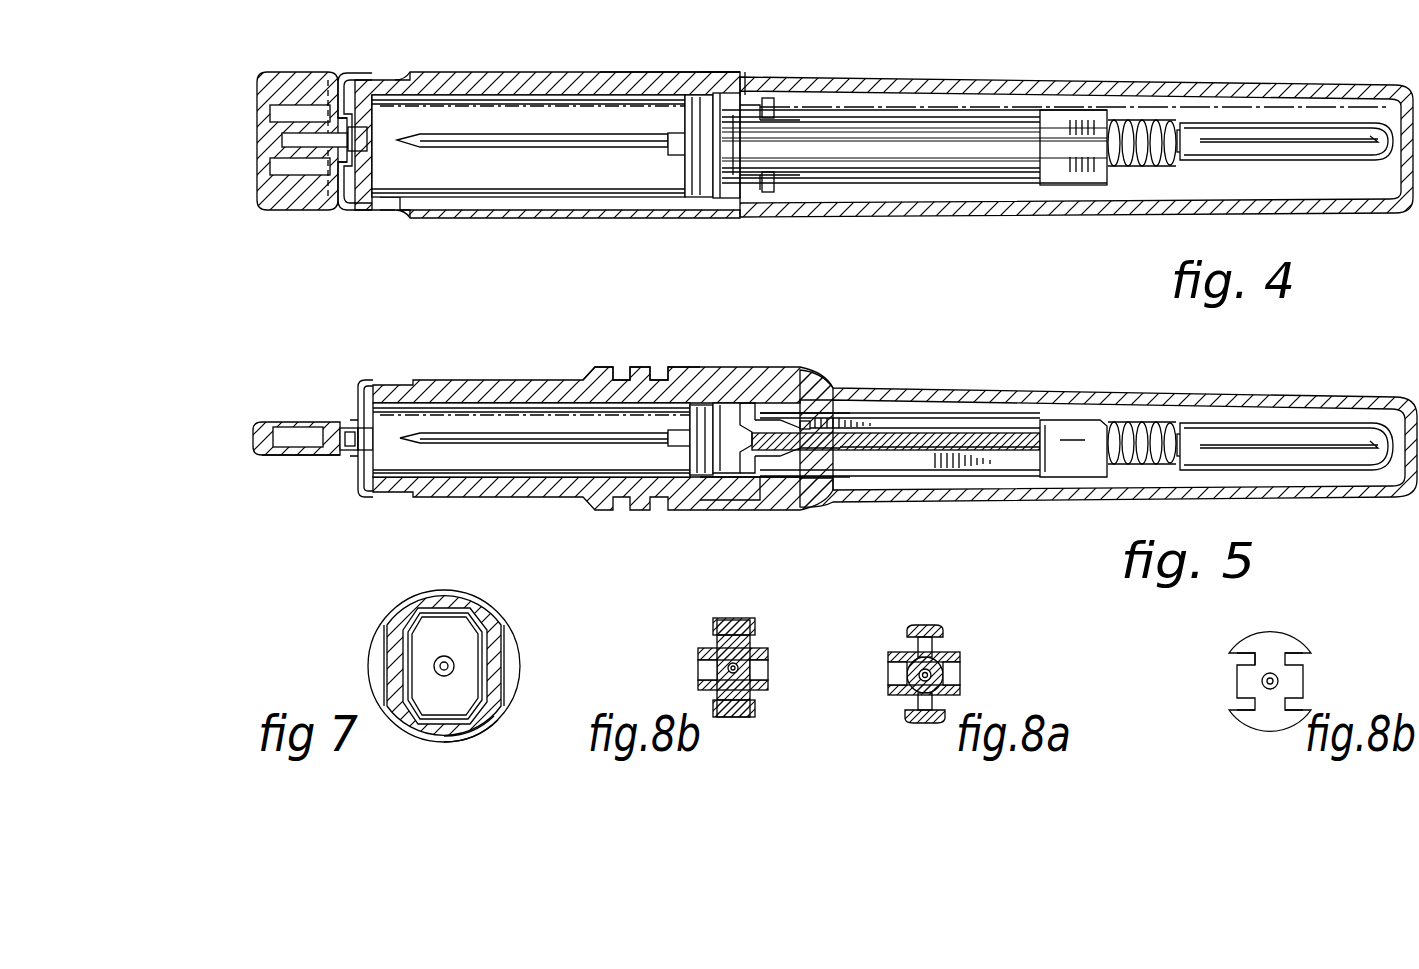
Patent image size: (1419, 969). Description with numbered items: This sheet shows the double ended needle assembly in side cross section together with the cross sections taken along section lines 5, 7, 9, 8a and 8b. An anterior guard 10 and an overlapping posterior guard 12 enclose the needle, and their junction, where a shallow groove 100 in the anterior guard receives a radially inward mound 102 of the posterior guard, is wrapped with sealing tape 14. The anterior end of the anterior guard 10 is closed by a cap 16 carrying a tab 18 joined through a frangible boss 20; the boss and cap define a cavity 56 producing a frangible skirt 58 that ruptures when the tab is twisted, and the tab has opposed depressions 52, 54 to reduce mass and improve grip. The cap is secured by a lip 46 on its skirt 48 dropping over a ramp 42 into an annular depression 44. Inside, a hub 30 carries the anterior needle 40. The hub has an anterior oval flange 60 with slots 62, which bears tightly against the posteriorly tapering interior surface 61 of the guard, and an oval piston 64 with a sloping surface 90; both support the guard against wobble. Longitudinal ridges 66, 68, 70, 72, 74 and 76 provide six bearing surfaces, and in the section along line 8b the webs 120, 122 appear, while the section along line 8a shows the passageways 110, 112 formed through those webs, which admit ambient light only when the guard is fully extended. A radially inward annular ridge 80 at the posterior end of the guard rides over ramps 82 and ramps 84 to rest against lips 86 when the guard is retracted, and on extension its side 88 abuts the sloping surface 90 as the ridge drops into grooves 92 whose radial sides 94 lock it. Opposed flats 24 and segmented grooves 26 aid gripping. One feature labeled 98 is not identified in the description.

In FIG. 4, the section line 5— 5 is at (275, 103).
In FIG. 4, the section line 7— 7 is at (367, 18).
In FIG. 4, the section line 9— 9 is at (685, 18).
In FIG. 4, the section line 8a— 8a is at (758, 18).
In FIG. 4, the section line 8b— 8b is at (1045, 36).
In FIG. 4, the anterior guard 10 is at (532, 68).
In FIG. 5, the anterior guard 10 is at (522, 378).
In FIG. 7, the anterior guard 10 is at (507, 607).
In FIG. 4, the posterior guard 12 is at (1108, 78).
In FIG. 5, the posterior guard 12 is at (950, 388).
In FIG. 4, the sealing tape 14 is at (663, 68).
In FIG. 4, the cap 16 is at (357, 210).
In FIG. 5, the cap 16 is at (412, 475).
In FIG. 7, the cap 16 is at (455, 596).
In FIG. 4, the tab 18 is at (293, 72).
In FIG. 5, the tab 18 is at (273, 422).
In FIG. 4, the frangible boss 20 is at (343, 205).
In FIG. 5, the frangible boss 20 is at (343, 425).
In FIG. 5, the opposed flats 24 is at (485, 497).
In FIG. 7, the opposed flats 24 is at (385, 660).
In FIG. 5, the segmented grooves 26 is at (612, 372).
In FIG. 4, the hub 30 is at (828, 100).
In FIG. 5, the hub 30 is at (888, 420).
In FIG. 8a, the hub 30 is at (922, 728).
In FIG. 4, the anterior needle 40 is at (516, 147).
In FIG. 5, the anterior needle 40 is at (475, 433).
In FIG. 8b, the anterior needle 40 is at (752, 672).
In FIG. 4, the ramp 42 is at (398, 76).
In FIG. 7, the ramp 42 is at (447, 732).
In FIG. 4, the annular depression 44 is at (412, 72).
In FIG. 4, the lip 46 is at (425, 200).
In FIG. 4, the skirt 48 is at (385, 220).
In FIG. 7, the skirt 48 is at (480, 727).
In FIG. 5, the opposed depression 52 is at (292, 430).
In FIG. 5, the opposed depression 54 is at (293, 455).
In FIG. 4, the cavity 56 is at (367, 140).
In FIG. 5, the cavity 56 is at (373, 438).
In FIG. 4, the frangible skirt 58 is at (345, 116).
In FIG. 5, the frangible skirt 58 is at (343, 455).
In FIG. 4, the anterior oval shaped flange 60 is at (672, 160).
In FIG. 9, the anterior oval shaped flange 60 is at (1262, 778).
In FIG. 4, the interior surface 61 is at (560, 197).
In FIG. 5, the interior surface 61 is at (542, 408).
In FIG. 7, the interior surface 61 is at (417, 628).
In FIG. 9, the slots 62 is at (1245, 658).
In FIG. 5, the piston 64 is at (725, 505).
In FIG. 8b, the longitudinally oriented ridge 66 is at (748, 620).
In FIG. 8a, the longitudinally oriented ridge 66 is at (930, 625).
In FIG. 5, the longitudinally oriented ridge 68 is at (915, 470).
In FIG. 8b, the longitudinally oriented ridge 68 is at (768, 650).
In FIG. 8a, the longitudinally oriented ridge 68 is at (960, 657).
In FIG. 8b, the longitudinally oriented ridge 70 is at (768, 688).
In FIG. 8a, the longitudinally oriented ridge 70 is at (960, 690).
In FIG. 8b, the longitudinally oriented ridge 72 is at (748, 717).
In FIG. 8b, the longitudinally oriented ridge 74 is at (700, 680).
In FIG. 8a, the longitudinally oriented ridge 74 is at (893, 688).
In FIG. 5, the longitudinally oriented ridge 76 is at (975, 428).
In FIG. 8b, the longitudinally oriented ridge 76 is at (705, 650).
In FIG. 8a, the longitudinally oriented ridge 76 is at (893, 655).
In FIG. 4, the annular ridge 80 is at (775, 192).
In FIG. 5, the annular ridge 80 is at (790, 395).
In FIG. 5, the ramp 82 is at (790, 470).
In FIG. 5, the ramp 84 is at (1075, 420).
In FIG. 5, the lip 86 is at (1112, 400).
In FIG. 5, the side of annular ridge 88 is at (745, 480).
In FIG. 5, the sloping surface 90 is at (703, 408).
In FIG. 4, the grooves 92 is at (762, 95).
In FIG. 5, the grooves 92 is at (745, 415).
In FIG. 5, the sides of grooves 94 is at (770, 415).
In FIG. 4, the rib 98 is at (748, 65).
In FIG. 4, the shallow groove 100 is at (690, 68).
In FIG. 4, the mound 102 is at (703, 218).
In FIG. 4, the passageway 110 is at (772, 98).
In FIG. 5, the passageway 110 is at (805, 465).
In FIG. 8a, the passageway 110 is at (940, 646).
In FIG. 4, the passageway 112 is at (772, 200).
In FIG. 8a, the passageway 112 is at (915, 708).
In FIG. 4, the web 120 is at (900, 114).
In FIG. 5, the web 120 is at (1005, 440).
In FIG. 8b, the web 120 is at (720, 632).
In FIG. 4, the web 122 is at (908, 178).
In FIG. 8b, the web 122 is at (722, 700).